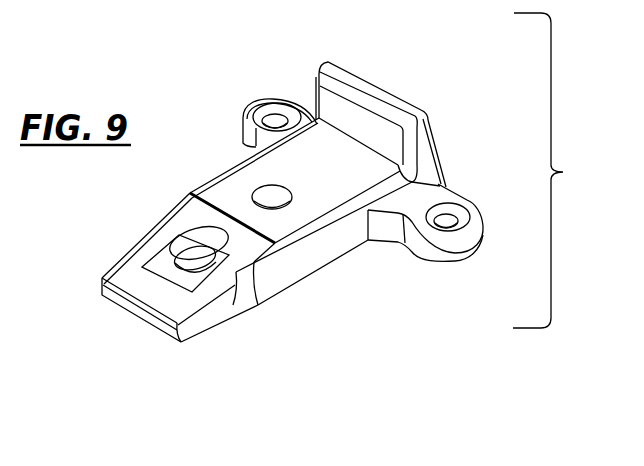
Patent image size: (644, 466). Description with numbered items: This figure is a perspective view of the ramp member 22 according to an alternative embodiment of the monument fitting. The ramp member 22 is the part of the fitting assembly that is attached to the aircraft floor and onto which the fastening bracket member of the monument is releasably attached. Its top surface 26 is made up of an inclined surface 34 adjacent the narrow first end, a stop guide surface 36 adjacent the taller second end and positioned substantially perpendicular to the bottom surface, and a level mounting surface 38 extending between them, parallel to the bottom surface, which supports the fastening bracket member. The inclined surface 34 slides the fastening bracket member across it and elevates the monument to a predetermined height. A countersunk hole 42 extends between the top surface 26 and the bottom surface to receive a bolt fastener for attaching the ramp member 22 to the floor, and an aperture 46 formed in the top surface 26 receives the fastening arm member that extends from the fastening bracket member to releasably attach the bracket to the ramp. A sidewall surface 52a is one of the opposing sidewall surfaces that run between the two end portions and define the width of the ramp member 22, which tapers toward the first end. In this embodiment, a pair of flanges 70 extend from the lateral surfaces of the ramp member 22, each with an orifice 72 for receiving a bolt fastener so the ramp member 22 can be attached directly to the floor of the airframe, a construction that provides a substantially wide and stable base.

The ramp member 22 is at (554, 170).
The top surface 26 is at (339, 184).
The inclined surface 34 is at (258, 270).
The stop guide surface 36 is at (314, 86).
The level mounting surface 38 is at (217, 178).
The countersunk hole 42 is at (192, 267).
The aperture 46 is at (268, 190).
The sidewall surface 52a is at (307, 276).
The flange 70 is at (247, 114).
The orifice 72 is at (280, 120).